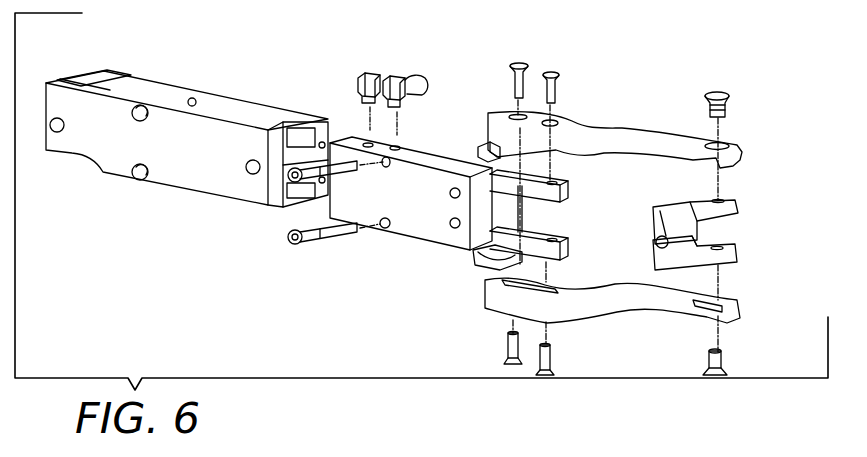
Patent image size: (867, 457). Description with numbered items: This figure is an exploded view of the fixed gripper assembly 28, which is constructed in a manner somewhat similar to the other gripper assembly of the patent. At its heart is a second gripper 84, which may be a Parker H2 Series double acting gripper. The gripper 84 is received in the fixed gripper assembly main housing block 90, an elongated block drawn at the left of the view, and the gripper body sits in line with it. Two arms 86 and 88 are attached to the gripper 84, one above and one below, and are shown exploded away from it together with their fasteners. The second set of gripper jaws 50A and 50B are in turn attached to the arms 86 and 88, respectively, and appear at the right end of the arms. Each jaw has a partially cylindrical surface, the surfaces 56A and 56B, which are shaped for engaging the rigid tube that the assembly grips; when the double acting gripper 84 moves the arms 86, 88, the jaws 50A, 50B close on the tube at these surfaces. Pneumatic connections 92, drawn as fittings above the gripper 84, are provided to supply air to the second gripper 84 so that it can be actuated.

The fixed gripper assembly 28 is at (706, 54).
The gripper jaw 50A is at (743, 205).
The gripper jaw 50B is at (736, 258).
The partially cylindrical surface 56A is at (660, 210).
The partially cylindrical surface 56B is at (657, 243).
The second gripper 84 is at (407, 237).
The arm 86 is at (620, 128).
The arm 88 is at (610, 315).
The fixed gripper assembly main housing block 90 is at (200, 178).
The pneumatic connections 92 is at (423, 77).